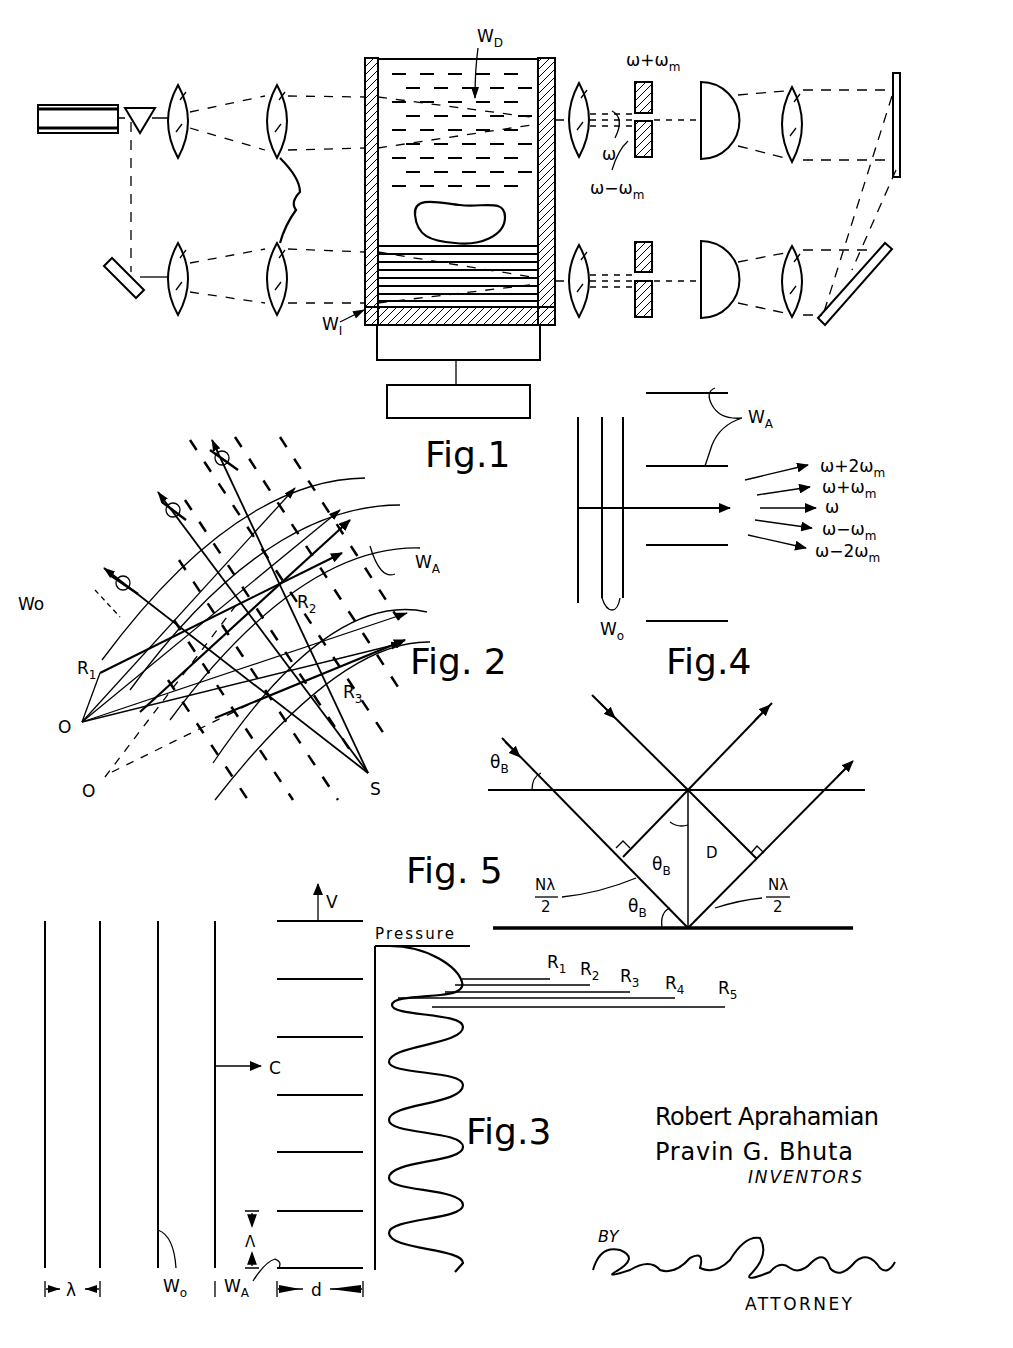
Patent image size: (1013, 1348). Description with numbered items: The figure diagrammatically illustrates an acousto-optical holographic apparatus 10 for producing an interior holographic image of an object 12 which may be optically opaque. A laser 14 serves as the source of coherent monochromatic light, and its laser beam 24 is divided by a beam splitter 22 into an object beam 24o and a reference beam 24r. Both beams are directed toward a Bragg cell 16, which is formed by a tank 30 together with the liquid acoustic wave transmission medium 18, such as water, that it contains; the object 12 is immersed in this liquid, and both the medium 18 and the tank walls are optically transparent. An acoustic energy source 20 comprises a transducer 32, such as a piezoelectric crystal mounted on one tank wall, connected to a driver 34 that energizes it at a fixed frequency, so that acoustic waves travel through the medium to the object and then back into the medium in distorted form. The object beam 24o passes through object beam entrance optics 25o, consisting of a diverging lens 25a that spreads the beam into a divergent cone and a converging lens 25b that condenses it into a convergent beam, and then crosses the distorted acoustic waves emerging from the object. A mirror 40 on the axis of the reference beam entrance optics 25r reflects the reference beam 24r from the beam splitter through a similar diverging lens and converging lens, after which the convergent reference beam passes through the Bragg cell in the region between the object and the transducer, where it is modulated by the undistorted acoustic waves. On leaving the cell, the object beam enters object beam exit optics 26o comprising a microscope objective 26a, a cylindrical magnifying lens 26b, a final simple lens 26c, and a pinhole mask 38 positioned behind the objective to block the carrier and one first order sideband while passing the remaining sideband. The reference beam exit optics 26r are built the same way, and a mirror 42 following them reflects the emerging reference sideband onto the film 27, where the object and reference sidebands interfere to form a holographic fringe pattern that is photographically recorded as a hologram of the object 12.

The acousto-optical holographic apparatus 10 is at (452, 42).
The object 12 is at (460, 223).
The laser 14 is at (100, 104).
The Bragg cell 16 is at (560, 54).
The acoustic wave transmission medium 18 is at (415, 62).
The acoustic energy source 20 is at (372, 406).
The beam splitter 22 is at (143, 104).
The laser beam 24 is at (118, 140).
The object beam 24o is at (314, 92).
The reference beam 24r is at (298, 312).
The diverging lens 25a is at (180, 158).
The converging lens 25b is at (276, 200).
The object beam entrance optics 25o is at (220, 88).
The reference beam entrance optics 25r is at (226, 310).
The microscope objective 26a is at (580, 84).
The cylindrical magnifying lens 26b is at (716, 84).
The final simple lens 26c is at (815, 58).
The object beam exit optics 26o is at (657, 54).
The reference beam exit optics 26r is at (660, 320).
The film 27 is at (892, 74).
The tank 30 is at (364, 194).
The transducer 32 is at (542, 352).
The driver 34 is at (528, 400).
The pinhole mask 38 is at (654, 160).
The mirror 40 is at (108, 284).
The mirror 42 is at (852, 288).